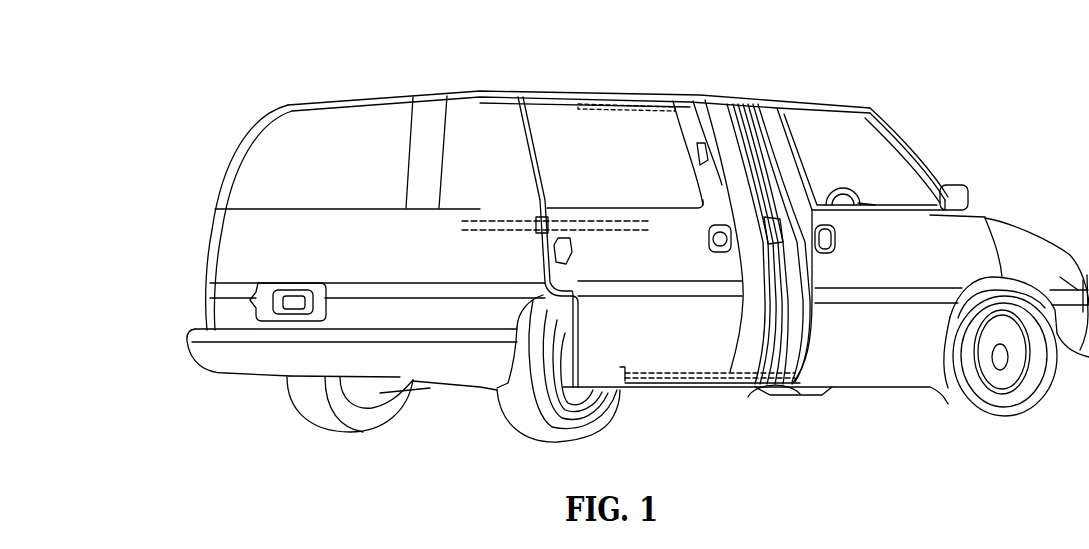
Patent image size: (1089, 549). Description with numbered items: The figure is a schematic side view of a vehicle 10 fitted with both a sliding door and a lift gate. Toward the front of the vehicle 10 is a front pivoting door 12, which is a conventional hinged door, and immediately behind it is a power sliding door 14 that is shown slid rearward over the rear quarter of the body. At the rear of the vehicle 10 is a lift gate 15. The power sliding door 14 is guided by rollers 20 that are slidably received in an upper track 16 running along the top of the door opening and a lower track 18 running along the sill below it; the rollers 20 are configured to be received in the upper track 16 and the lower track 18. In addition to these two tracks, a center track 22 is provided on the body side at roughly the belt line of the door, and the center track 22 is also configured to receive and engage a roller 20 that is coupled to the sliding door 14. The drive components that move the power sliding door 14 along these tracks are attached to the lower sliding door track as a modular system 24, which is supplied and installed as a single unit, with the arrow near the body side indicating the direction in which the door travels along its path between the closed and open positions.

The vehicle 10 is at (976, 113).
The front pivoting door 12 is at (888, 353).
The power sliding door 14 is at (615, 387).
The lift gate 15 is at (245, 249).
The upper track 16 is at (604, 97).
The lower track 18 is at (652, 387).
The rollers 20 is at (673, 100).
The center track 22 is at (463, 219).
The modular system 24 is at (520, 246).